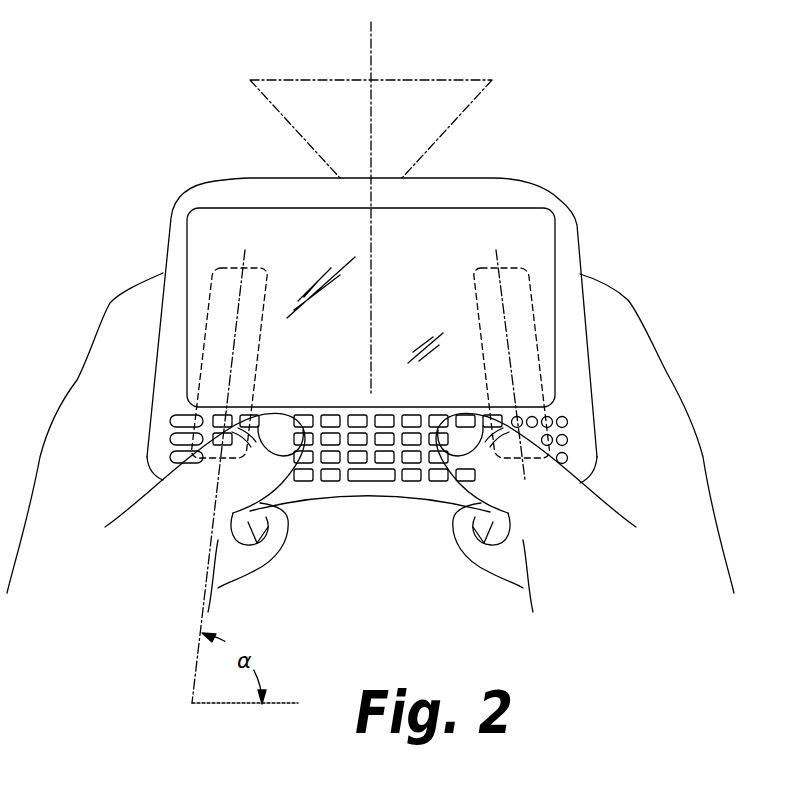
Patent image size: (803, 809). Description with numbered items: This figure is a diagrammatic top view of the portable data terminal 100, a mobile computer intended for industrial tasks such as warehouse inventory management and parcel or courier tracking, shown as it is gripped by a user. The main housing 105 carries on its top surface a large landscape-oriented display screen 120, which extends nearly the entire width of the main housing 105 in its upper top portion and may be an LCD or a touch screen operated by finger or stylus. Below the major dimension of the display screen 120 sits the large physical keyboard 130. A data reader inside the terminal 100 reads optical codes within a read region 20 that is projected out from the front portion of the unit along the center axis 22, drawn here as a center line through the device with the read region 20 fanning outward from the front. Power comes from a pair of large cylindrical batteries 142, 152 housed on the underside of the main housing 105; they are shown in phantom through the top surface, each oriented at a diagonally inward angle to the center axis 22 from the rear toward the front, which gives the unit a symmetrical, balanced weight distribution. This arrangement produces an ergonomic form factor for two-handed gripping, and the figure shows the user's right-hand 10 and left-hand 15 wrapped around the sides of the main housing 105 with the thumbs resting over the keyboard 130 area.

The right-hand 10 is at (644, 388).
The left-hand 15 is at (92, 397).
The read region 20 is at (425, 80).
The center axis 22 is at (371, 42).
The portable data terminal 100 is at (569, 174).
The main housing 105 is at (575, 217).
The display screen 120 is at (471, 234).
The keyboard 130 is at (331, 479).
The battery 142 is at (213, 278).
The battery 152 is at (531, 277).